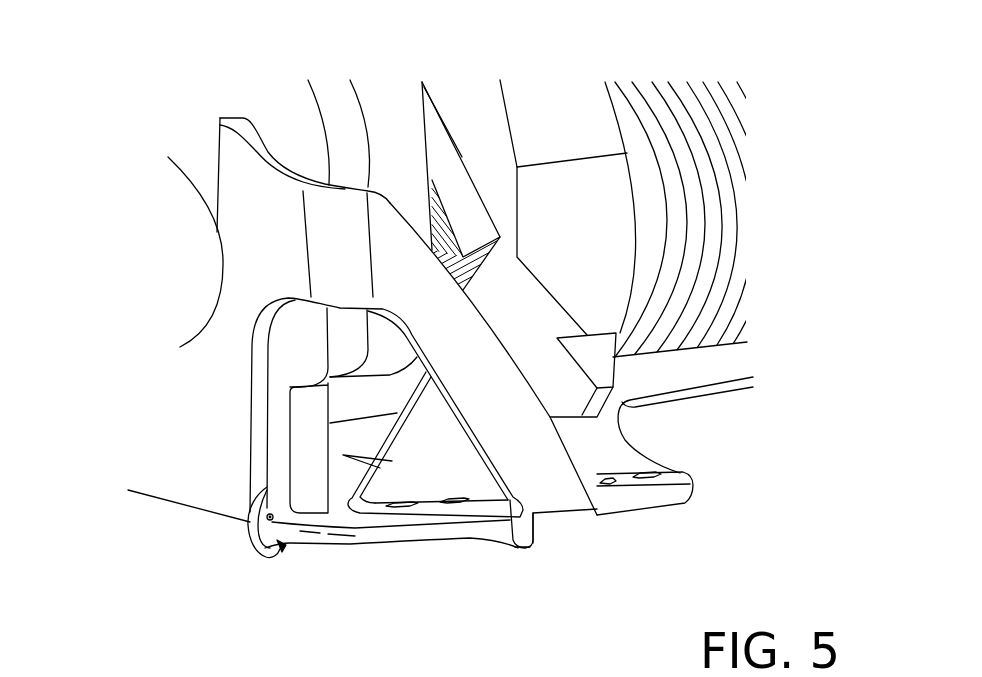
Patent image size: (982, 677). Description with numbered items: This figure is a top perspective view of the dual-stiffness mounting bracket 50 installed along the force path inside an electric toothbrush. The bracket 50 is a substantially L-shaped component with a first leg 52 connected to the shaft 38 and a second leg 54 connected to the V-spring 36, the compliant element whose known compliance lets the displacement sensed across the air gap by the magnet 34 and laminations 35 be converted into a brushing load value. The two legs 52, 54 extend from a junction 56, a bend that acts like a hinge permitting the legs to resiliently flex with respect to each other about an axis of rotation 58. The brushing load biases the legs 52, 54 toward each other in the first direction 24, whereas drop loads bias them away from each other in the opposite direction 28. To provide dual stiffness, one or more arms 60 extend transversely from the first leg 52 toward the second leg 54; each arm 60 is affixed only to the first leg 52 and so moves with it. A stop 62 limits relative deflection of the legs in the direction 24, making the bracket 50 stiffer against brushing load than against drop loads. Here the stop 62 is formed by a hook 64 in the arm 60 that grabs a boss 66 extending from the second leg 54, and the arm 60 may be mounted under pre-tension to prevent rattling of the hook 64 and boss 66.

The first direction 24 is at (262, 500).
The direction 28 is at (255, 538).
The magnet 34 is at (388, 93).
The laminations 35 is at (455, 180).
The V-spring 36 is at (690, 380).
The shaft 38 is at (150, 205).
The dual-stiffness mounting bracket 50 is at (234, 98).
The first leg 52 is at (218, 414).
The second leg 54 is at (430, 533).
The junction 56 is at (290, 542).
The axis of rotation 58 is at (323, 547).
The arm 60 is at (570, 518).
The stop 62 is at (519, 576).
The hook 64 is at (533, 540).
The boss 66 is at (497, 530).